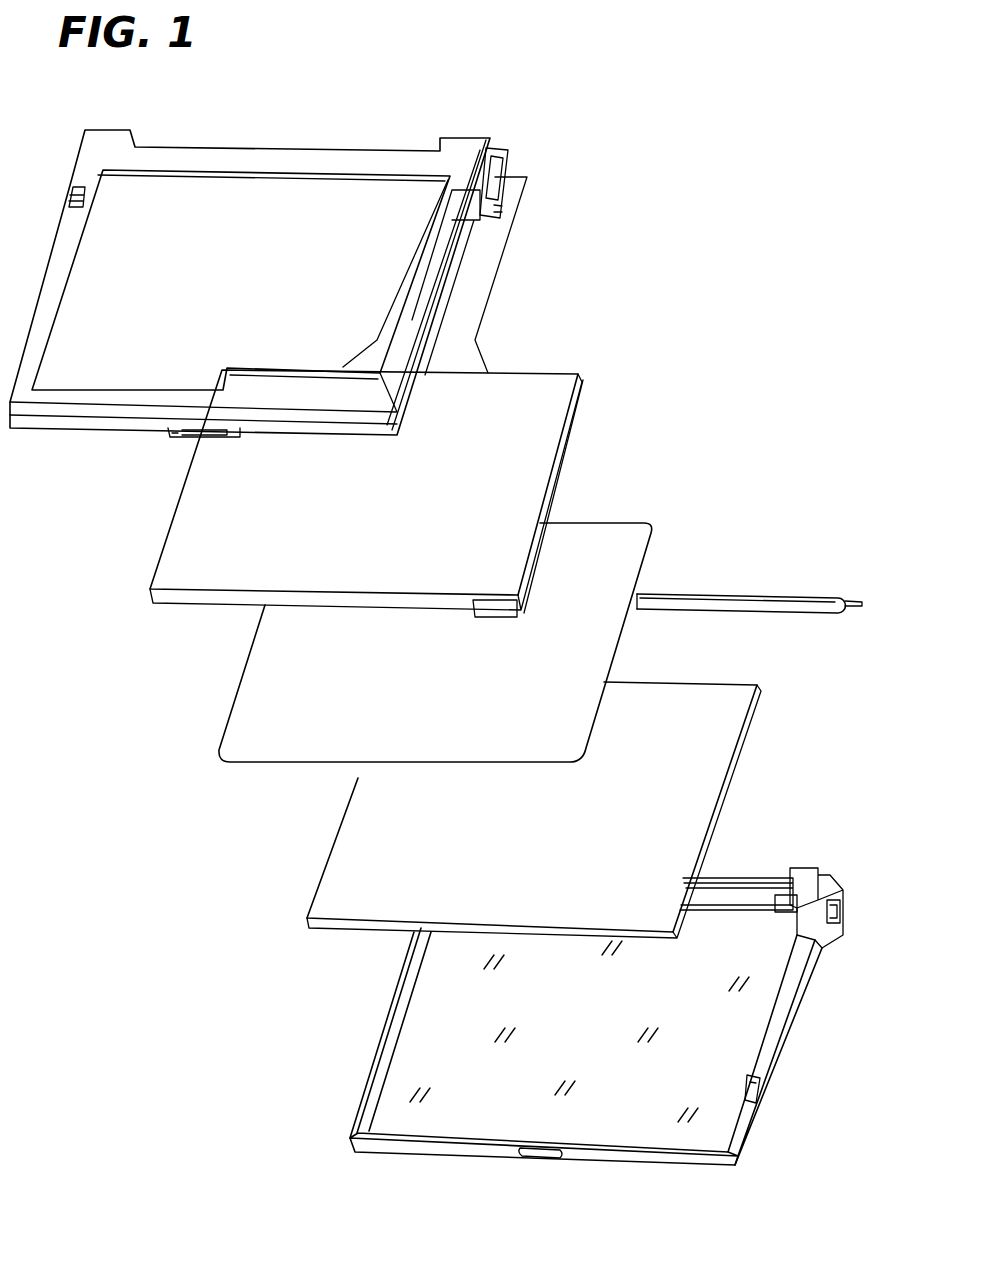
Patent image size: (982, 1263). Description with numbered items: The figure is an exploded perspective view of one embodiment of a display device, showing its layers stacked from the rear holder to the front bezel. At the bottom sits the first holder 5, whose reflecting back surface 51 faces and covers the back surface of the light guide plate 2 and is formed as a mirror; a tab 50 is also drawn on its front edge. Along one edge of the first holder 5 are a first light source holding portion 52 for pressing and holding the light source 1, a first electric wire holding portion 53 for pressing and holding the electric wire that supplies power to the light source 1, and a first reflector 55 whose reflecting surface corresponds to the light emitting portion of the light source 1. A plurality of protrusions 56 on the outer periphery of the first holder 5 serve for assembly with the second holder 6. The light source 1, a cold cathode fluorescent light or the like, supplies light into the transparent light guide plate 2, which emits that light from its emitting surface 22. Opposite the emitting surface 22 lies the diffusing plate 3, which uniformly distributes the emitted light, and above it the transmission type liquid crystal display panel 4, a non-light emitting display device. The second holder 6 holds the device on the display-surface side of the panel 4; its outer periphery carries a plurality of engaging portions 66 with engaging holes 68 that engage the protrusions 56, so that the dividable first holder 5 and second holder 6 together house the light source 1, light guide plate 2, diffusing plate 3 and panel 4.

The light source 1 is at (782, 598).
The light guide plate 2 is at (560, 810).
The emitting surface 22 is at (660, 788).
The diffusing plate 3 is at (633, 557).
The transmission type liquid crystal display panel 4 is at (518, 463).
The first holder 5 is at (768, 1050).
The projection 50 is at (537, 1158).
The reflecting back surface 51 is at (665, 988).
The first light source holding portion 52 is at (797, 915).
The first electric wire holding portion 53 is at (818, 870).
The first reflector 55 is at (735, 893).
The protrusions 56 is at (832, 917).
The second holder 6 is at (418, 283).
The engaging portions 66 is at (503, 200).
The engaging holes 68 is at (503, 172).